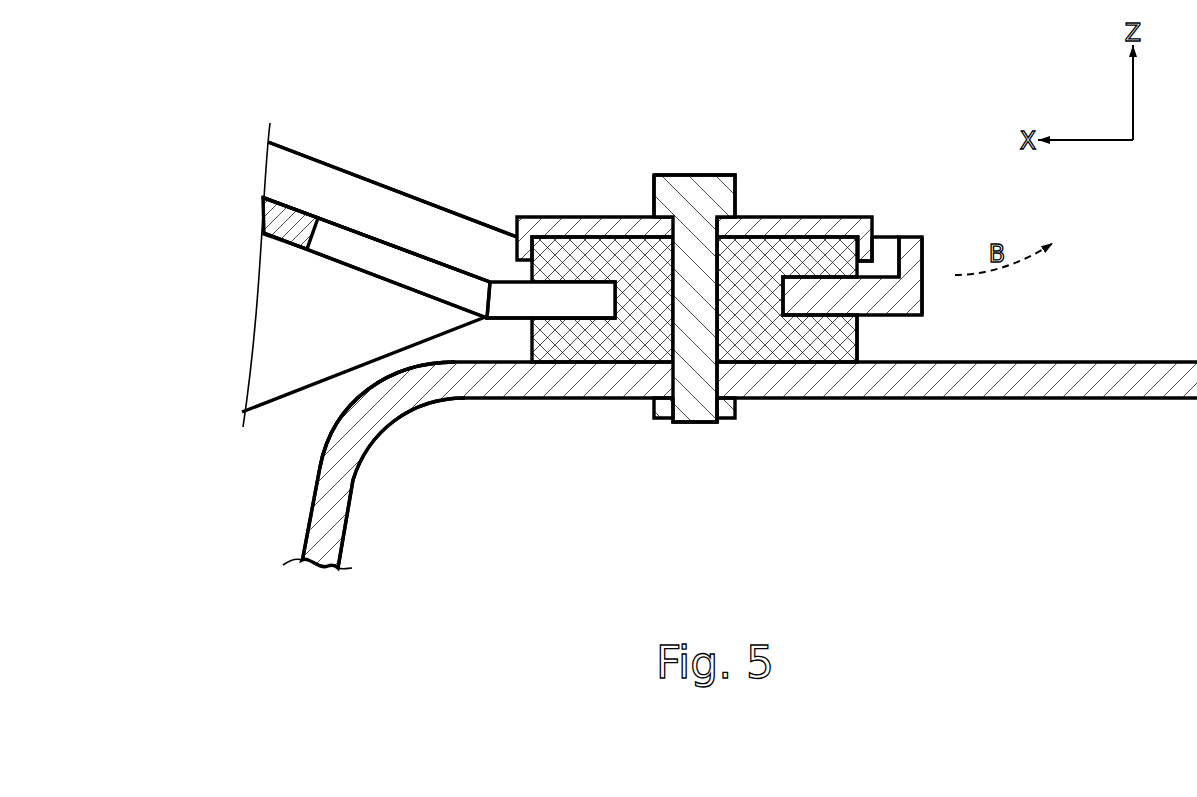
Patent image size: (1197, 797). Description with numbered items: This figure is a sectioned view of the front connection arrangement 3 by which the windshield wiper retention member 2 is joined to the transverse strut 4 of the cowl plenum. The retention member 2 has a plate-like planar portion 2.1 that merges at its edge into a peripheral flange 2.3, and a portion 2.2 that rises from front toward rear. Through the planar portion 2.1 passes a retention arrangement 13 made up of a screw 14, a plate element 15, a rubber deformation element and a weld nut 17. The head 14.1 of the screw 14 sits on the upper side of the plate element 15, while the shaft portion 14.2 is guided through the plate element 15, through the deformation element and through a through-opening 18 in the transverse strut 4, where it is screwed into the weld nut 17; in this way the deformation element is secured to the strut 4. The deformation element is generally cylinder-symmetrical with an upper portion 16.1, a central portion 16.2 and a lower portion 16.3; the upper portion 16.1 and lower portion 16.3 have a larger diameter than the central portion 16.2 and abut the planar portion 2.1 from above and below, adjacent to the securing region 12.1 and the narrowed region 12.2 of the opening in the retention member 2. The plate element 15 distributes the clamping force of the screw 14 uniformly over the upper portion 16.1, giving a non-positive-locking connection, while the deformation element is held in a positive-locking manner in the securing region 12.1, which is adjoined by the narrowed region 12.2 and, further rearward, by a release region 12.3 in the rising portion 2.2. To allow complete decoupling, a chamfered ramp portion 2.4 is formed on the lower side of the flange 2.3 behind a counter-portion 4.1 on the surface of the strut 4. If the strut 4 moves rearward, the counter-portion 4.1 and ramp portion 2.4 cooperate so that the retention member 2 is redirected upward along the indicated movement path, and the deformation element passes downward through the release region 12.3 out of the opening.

The windshield wiper retention member 2 is at (323, 163).
The planar portion 2.1 is at (505, 321).
The rising portion 2.2 is at (358, 183).
The peripheral flange 2.3 is at (403, 180).
The ramp portion 2.4 is at (358, 378).
The front connection arrangement 3 is at (897, 163).
The transverse strut 4 is at (314, 493).
The counter-portion 4.1 is at (329, 406).
The securing region 12.1 is at (648, 296).
The narrowed region 12.2 is at (547, 297).
The release region 12.3 is at (334, 259).
The retention arrangement 13 is at (573, 135).
The screw 14 is at (691, 176).
The head 14.1 is at (741, 176).
The shaft portion 14.2 is at (718, 333).
The plate element 15 is at (812, 216).
The upper portion 16.1 is at (867, 265).
The central portion 16.2 is at (792, 293).
The lower portion 16.3 is at (863, 333).
The weld nut 17 is at (670, 408).
The through-opening 18 is at (693, 363).